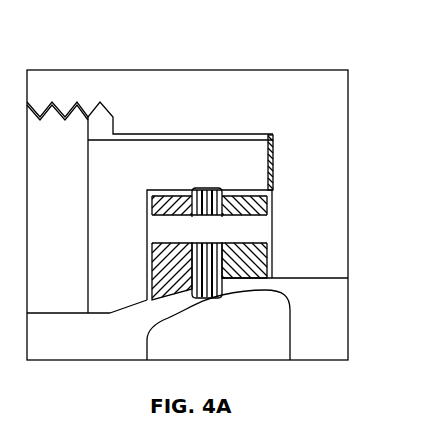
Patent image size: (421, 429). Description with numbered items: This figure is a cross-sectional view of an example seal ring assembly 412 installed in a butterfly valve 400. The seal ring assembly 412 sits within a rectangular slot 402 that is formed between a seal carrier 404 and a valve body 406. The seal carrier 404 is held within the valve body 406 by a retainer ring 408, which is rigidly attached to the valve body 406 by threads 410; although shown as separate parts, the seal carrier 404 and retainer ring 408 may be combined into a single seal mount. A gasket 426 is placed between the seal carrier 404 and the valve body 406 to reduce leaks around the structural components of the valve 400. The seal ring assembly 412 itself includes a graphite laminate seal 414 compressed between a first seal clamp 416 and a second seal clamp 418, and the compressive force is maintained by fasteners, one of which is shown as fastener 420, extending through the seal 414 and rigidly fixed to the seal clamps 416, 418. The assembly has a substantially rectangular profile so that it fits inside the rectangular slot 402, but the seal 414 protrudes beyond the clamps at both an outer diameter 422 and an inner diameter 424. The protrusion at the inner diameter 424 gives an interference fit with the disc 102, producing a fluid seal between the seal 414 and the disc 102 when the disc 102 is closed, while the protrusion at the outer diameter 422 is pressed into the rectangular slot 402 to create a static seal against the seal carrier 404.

The butterfly valve 400 is at (105, 55).
The threads 410 is at (52, 102).
The retainer ring 408 is at (45, 305).
The seal carrier 404 is at (105, 298).
The disc 102 is at (283, 337).
The valve body 406 is at (333, 272).
The rectangular slot 402 is at (247, 188).
The seal ring assembly 412 is at (274, 232).
The gasket 426 is at (274, 170).
The fastener 420 is at (165, 232).
The first seal clamp 416 is at (160, 285).
The second seal clamp 418 is at (258, 268).
The graphite laminate seal 414 is at (212, 190).
The outer diameter 422 is at (207, 190).
The inner diameter 424 is at (212, 297).